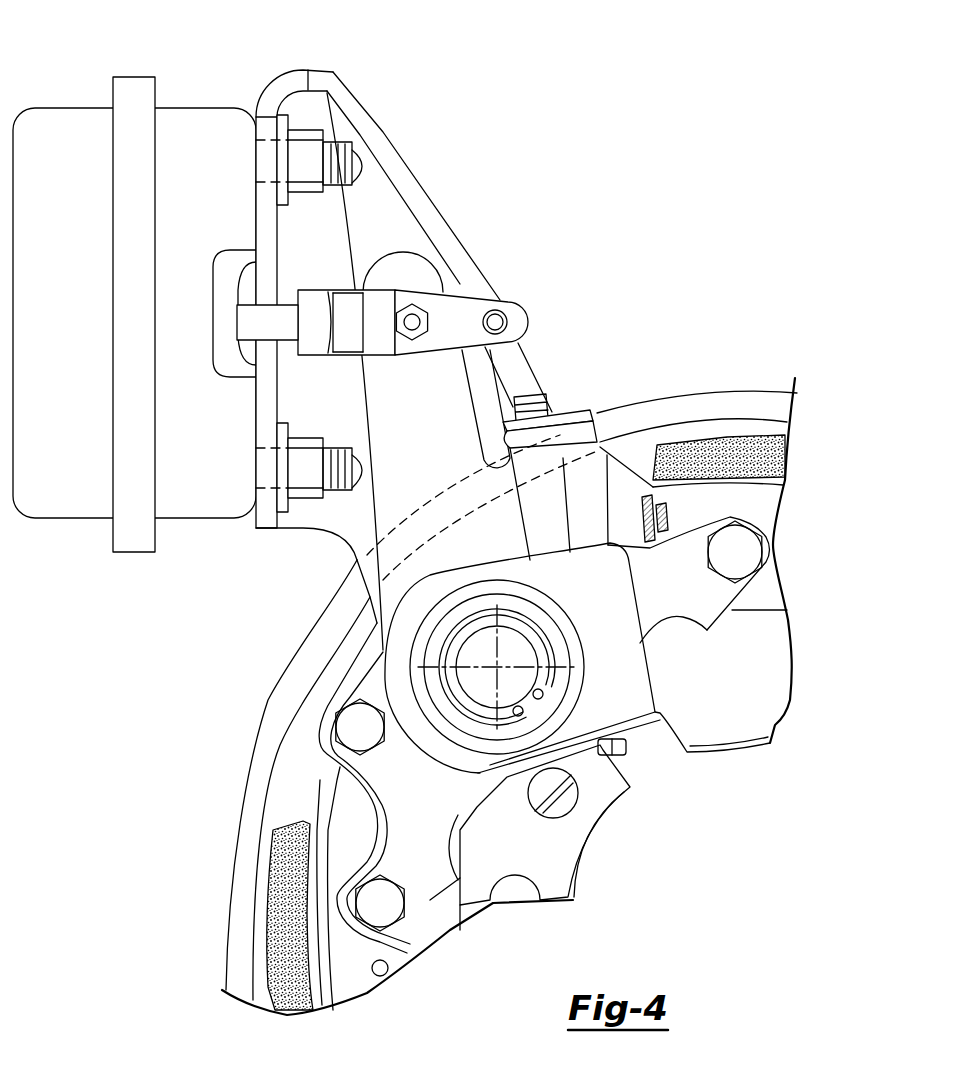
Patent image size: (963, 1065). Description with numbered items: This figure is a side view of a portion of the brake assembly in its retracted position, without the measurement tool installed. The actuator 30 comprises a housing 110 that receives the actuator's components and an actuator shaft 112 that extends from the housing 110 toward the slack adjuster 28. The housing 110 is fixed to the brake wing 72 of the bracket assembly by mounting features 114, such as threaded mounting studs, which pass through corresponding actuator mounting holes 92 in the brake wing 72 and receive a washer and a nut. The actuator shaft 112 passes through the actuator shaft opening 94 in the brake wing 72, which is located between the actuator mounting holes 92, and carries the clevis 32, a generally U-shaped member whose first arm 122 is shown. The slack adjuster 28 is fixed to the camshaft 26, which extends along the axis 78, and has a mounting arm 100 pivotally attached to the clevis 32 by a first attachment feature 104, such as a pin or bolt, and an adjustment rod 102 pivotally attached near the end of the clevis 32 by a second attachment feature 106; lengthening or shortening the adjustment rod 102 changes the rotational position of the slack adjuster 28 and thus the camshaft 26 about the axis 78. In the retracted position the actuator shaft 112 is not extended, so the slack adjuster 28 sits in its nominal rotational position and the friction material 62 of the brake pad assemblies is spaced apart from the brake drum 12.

The brake drum 12 is at (257, 727).
The camshaft 26 is at (523, 660).
The slack adjuster 28 is at (626, 687).
The actuator 30 is at (78, 192).
The clevis 32 is at (524, 308).
The friction material 62 is at (770, 460).
The brake wing 72 is at (277, 78).
The axis 78 is at (503, 665).
The actuator mounting hole 92 is at (299, 335).
The actuator shaft opening 94 is at (280, 370).
The mounting arm 100 is at (378, 262).
The adjustment rod 102 is at (515, 372).
The first attachment feature 104 is at (413, 326).
The second attachment feature 106 is at (496, 316).
The housing 110 is at (193, 512).
The actuator shaft 112 is at (280, 307).
The mounting feature 114 is at (340, 180).
The first arm 122 is at (530, 312).